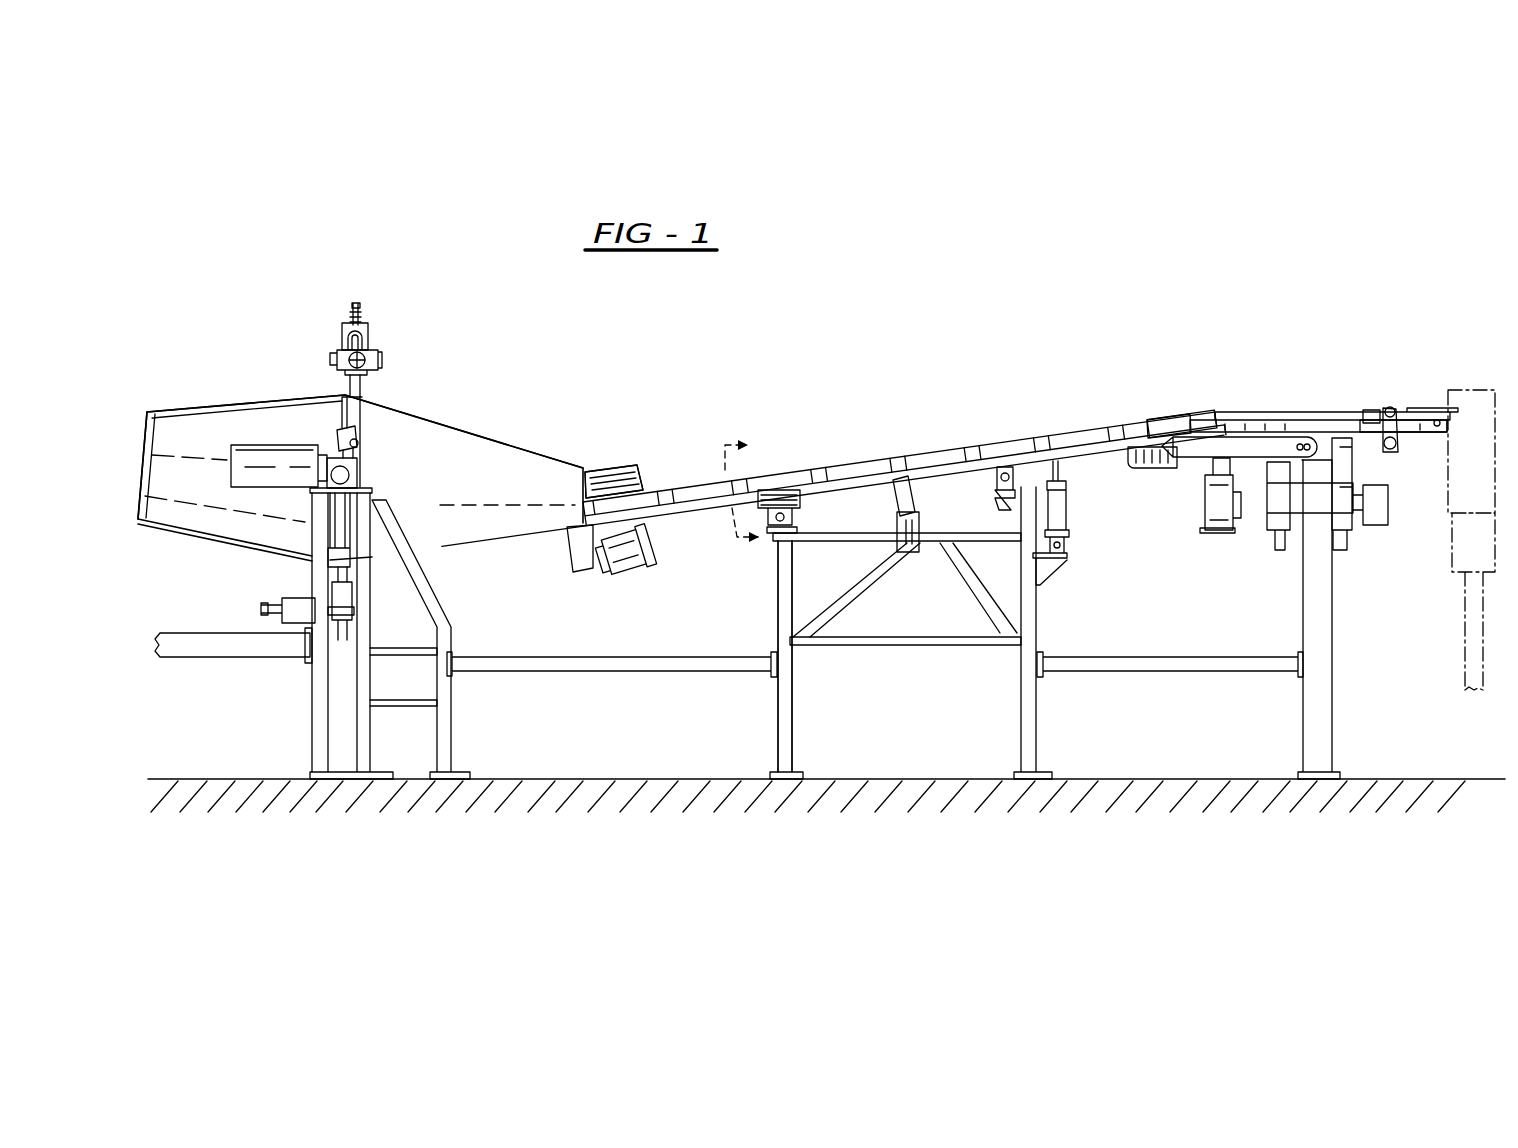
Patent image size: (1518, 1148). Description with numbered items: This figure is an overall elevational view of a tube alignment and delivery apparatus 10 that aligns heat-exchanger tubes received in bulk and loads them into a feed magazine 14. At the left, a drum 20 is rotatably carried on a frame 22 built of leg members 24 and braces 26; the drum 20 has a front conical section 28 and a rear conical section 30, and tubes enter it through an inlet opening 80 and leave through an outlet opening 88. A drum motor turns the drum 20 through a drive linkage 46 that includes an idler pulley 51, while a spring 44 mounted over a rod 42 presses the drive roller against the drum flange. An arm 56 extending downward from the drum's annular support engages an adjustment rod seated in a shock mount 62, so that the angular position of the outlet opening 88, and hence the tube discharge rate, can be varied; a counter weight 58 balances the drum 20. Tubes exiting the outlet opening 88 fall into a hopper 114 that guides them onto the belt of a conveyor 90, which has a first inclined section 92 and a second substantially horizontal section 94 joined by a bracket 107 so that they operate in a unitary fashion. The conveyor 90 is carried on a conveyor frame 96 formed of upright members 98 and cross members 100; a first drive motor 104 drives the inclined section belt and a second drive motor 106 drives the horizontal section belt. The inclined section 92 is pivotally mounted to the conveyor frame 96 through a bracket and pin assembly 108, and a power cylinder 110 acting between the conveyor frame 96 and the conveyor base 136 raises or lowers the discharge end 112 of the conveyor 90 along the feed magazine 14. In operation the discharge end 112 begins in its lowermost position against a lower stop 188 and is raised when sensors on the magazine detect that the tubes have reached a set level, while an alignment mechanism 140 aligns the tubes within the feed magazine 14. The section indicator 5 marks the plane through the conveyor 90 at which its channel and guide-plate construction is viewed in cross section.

The tube alignment and delivery apparatus 10 is at (774, 452).
The feed magazine 14 is at (1483, 389).
The drum 20 is at (491, 430).
The frame 22 is at (417, 633).
The leg members 24 is at (366, 728).
The braces 26 is at (397, 707).
The front conical section 28 is at (414, 431).
The rear conical section 30 is at (237, 413).
The rod 42 is at (356, 301).
The spring 44 is at (364, 318).
The drive linkage 46 is at (381, 347).
The idler pulley 51 is at (336, 431).
The arm 56 is at (341, 346).
The counter weight 58 is at (356, 599).
The shock mount 62 is at (282, 620).
The inlet opening 80 is at (147, 414).
The outlet opening 88 is at (598, 465).
The conveyor 90 is at (919, 449).
The first inclined section 92 is at (1112, 423).
The second substantially horizontal section 94 is at (1318, 418).
The conveyor frame 96 is at (797, 738).
The upright members 98 is at (793, 683).
The cross members 100 is at (947, 542).
The first drive motor 104 is at (637, 572).
The second drive motor 106 is at (1212, 505).
The bracket 107 is at (1165, 452).
The bracket and pin assembly 108 is at (803, 508).
The power cylinder 110 is at (1063, 516).
The discharge end 112 is at (1427, 404).
The hopper 114 is at (625, 466).
The conveyor base 136 is at (1064, 433).
The alignment mechanism 140 is at (1423, 437).
The lower stop 188 is at (1305, 548).
The section line 5- 5 is at (741, 495).